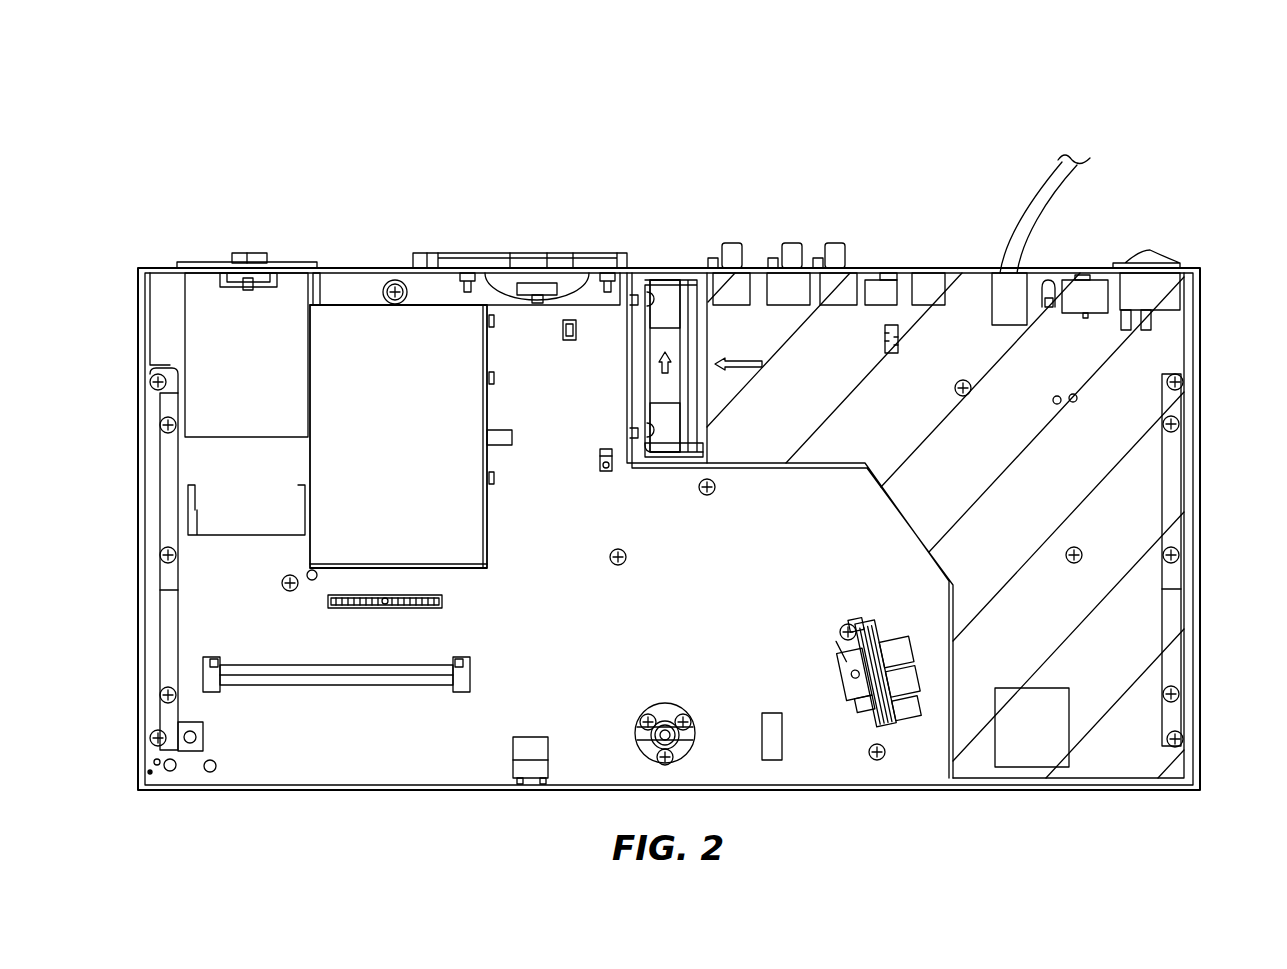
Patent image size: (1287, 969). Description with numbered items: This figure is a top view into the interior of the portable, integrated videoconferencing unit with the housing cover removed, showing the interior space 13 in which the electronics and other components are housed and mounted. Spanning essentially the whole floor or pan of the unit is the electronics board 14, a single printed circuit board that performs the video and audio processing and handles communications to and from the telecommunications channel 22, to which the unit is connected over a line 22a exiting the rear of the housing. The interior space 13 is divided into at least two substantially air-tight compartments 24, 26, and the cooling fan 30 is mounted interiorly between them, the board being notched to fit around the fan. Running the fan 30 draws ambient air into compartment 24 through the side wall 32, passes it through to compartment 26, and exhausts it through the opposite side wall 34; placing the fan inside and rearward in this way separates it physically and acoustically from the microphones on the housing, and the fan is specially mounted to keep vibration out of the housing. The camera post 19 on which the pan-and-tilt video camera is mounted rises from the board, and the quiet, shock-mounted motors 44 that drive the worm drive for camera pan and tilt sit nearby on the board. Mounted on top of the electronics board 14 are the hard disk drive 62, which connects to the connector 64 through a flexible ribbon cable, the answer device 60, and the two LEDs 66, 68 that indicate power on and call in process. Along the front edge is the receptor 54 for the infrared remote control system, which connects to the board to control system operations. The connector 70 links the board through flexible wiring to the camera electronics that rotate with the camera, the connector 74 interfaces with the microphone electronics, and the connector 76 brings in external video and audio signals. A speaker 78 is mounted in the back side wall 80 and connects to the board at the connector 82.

The interior space 13 is at (525, 443).
The electronics board 14 is at (722, 578).
The camera post 19 is at (665, 703).
The telecommunications channel 22 is at (1082, 158).
The line 22a is at (1075, 188).
The compartment 24 is at (845, 325).
The compartment 26 is at (508, 327).
The cooling fan 30 is at (663, 300).
The side wall 32 is at (1203, 522).
The side wall 34 is at (140, 608).
The motors 44 is at (885, 618).
The receptor 54 is at (530, 737).
The answer device 60 is at (205, 735).
The hard disk drive 62 is at (413, 469).
The connector 64 is at (445, 603).
The LED 66 is at (172, 771).
The LED 68 is at (216, 766).
The connector 70 is at (772, 713).
The connector 74 is at (1028, 688).
The connector 76 is at (890, 272).
The speaker 78 is at (528, 298).
The back side wall 80 is at (974, 272).
The connector 82 is at (578, 330).